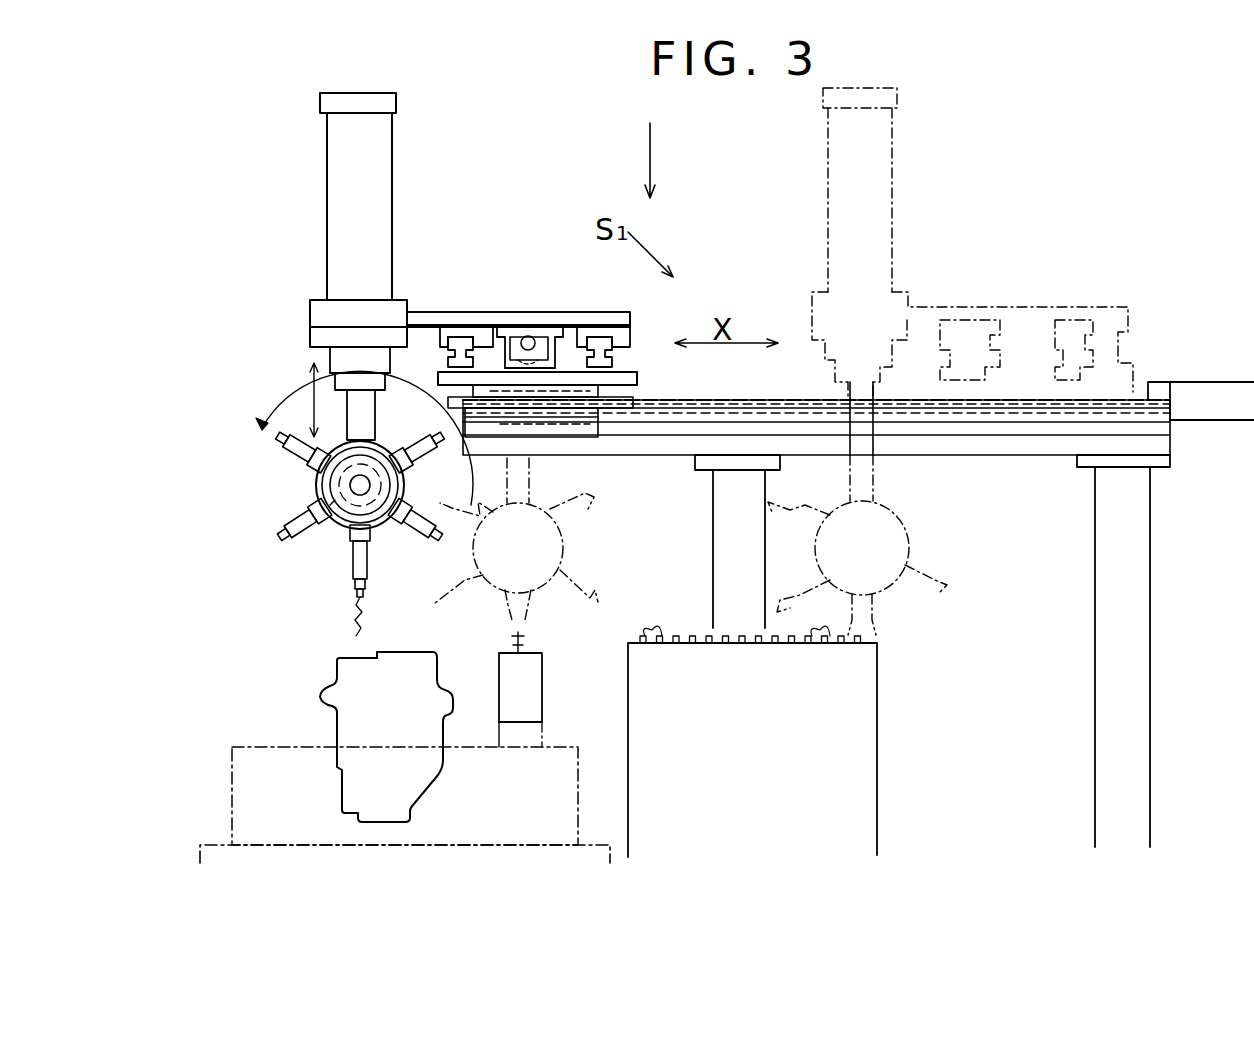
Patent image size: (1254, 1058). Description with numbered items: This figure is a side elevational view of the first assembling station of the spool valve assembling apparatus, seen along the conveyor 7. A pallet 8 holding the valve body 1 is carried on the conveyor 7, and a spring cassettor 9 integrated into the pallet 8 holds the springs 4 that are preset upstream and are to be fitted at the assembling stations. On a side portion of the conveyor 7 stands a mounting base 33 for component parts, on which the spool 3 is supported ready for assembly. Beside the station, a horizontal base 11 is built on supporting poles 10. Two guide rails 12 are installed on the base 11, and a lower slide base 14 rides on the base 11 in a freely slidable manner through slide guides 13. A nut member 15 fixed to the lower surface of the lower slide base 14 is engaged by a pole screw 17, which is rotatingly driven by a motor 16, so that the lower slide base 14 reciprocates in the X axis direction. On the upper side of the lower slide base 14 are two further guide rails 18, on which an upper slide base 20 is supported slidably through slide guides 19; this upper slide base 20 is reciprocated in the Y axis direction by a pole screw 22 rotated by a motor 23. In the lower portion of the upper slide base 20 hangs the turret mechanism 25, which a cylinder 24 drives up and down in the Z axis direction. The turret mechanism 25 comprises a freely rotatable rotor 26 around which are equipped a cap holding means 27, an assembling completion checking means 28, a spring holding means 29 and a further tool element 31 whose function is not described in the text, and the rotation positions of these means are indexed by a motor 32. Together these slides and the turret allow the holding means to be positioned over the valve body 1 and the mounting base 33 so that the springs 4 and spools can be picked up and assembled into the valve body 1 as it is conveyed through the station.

The valve body 1 is at (430, 670).
The spool 3 is at (648, 636).
The springs 4 is at (348, 636).
The conveyor 7 is at (217, 843).
The pallet 8 is at (252, 745).
The spring cassettor 9 is at (533, 680).
The supporting poles 10 is at (713, 527).
The base 11 is at (680, 453).
The guide rails 12 is at (733, 398).
The slide guides 13 is at (542, 405).
The lower slide base 14 is at (637, 378).
The nut member 15 is at (573, 433).
The motor 16 is at (1197, 390).
The pole screw 17 is at (795, 398).
The guide rails 18 is at (607, 357).
The slide guides 19 is at (463, 332).
The upper slide base 20 is at (433, 317).
The pole screw 22 is at (540, 323).
The motor 23 is at (527, 320).
The cylinder 24 is at (385, 198).
The turret mechanism 25 is at (280, 418).
The rotor 26 is at (390, 445).
The cap holding means 27 is at (305, 462).
The assembling completion checking means 28 is at (315, 522).
The spring holding means 29 is at (370, 553).
The tool 31 is at (427, 493).
The motor 32 is at (333, 487).
The mounting base 33 is at (870, 683).